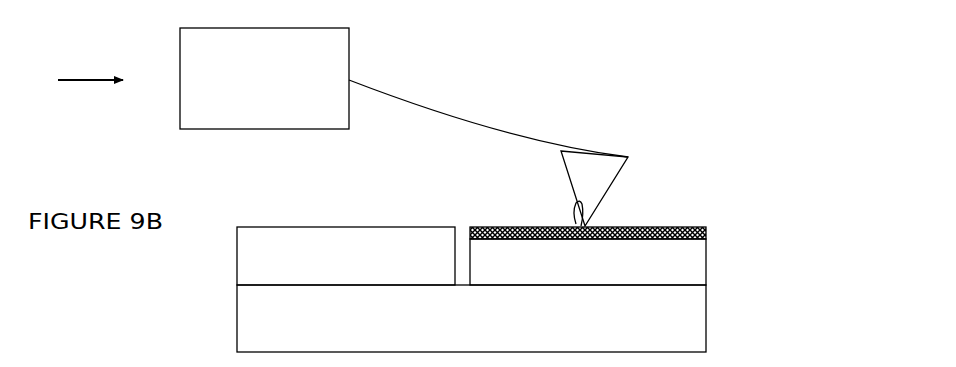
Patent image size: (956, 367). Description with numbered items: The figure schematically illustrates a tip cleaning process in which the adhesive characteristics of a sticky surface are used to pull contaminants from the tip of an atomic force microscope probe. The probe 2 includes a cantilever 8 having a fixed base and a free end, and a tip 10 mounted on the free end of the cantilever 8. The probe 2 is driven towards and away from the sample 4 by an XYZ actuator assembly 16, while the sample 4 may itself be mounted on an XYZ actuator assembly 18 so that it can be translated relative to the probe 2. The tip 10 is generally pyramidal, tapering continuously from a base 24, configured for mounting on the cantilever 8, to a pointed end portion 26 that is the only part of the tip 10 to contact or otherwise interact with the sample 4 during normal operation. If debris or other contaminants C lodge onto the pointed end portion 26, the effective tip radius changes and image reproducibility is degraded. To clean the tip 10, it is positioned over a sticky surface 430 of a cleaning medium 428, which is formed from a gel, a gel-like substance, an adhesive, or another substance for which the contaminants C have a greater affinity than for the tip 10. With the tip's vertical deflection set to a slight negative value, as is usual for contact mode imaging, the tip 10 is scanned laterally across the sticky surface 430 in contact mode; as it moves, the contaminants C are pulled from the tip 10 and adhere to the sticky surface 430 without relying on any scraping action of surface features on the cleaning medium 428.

The probe 2 is at (520, 142).
The sample 4 is at (237, 256).
The cantilever 8 is at (395, 98).
The tip 10 is at (573, 184).
The XYZ actuator assembly 16 is at (349, 50).
The XYZ actuator assembly 18 is at (237, 319).
The base 24 is at (613, 183).
The pointed end portion 26 is at (596, 219).
The contaminants C is at (574, 222).
The cleaning medium 428 is at (709, 256).
The sticky surface 430 is at (692, 225).